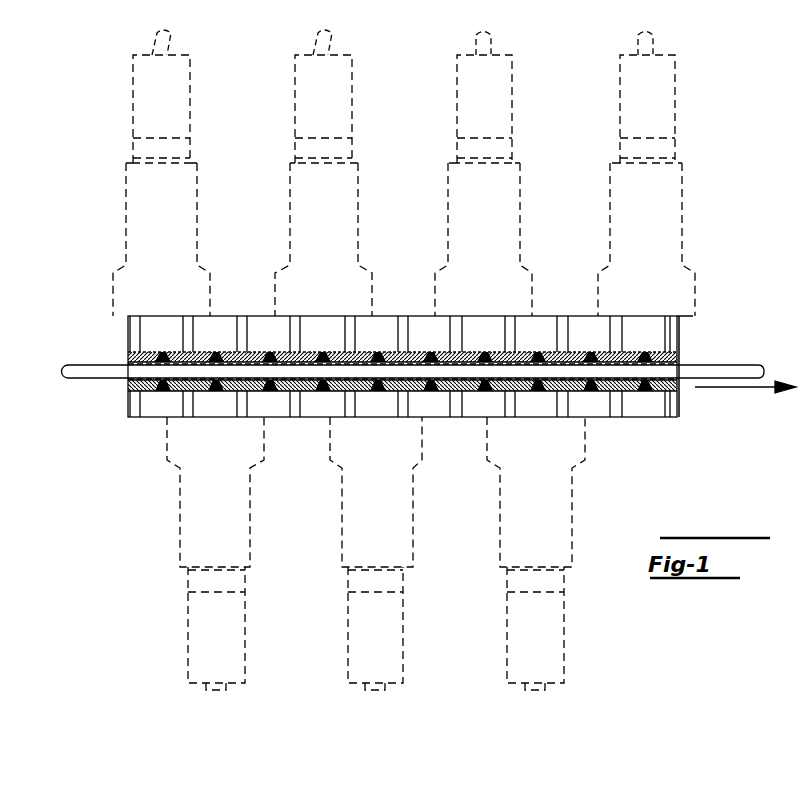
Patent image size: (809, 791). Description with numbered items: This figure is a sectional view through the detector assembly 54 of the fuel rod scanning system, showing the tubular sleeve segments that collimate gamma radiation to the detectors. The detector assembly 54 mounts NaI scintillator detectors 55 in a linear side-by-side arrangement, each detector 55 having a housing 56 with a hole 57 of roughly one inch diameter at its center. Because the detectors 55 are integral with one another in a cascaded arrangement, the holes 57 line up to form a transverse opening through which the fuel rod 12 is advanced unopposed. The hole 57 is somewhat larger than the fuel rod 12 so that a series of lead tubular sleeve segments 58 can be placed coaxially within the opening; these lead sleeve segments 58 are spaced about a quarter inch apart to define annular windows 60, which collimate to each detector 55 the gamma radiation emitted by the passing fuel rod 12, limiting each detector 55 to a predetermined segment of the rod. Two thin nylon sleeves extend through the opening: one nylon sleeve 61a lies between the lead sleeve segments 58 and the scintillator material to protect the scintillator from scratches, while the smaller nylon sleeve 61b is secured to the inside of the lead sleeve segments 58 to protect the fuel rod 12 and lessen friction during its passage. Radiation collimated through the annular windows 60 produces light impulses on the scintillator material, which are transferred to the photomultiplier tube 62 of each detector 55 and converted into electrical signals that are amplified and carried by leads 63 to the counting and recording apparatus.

The fuel rod 12 is at (741, 366).
The detector assembly 54 is at (690, 95).
The detector 55 is at (290, 149).
The housing 56 is at (310, 332).
The hole 57 is at (128, 352).
The lead tubular sleeve segment 58 is at (258, 393).
The annular window 60 is at (425, 356).
The nylon sleeve 61a is at (131, 396).
The nylon sleeve 61b is at (131, 378).
The photomultiplier tube 62 is at (290, 232).
The leads 63 is at (320, 40).